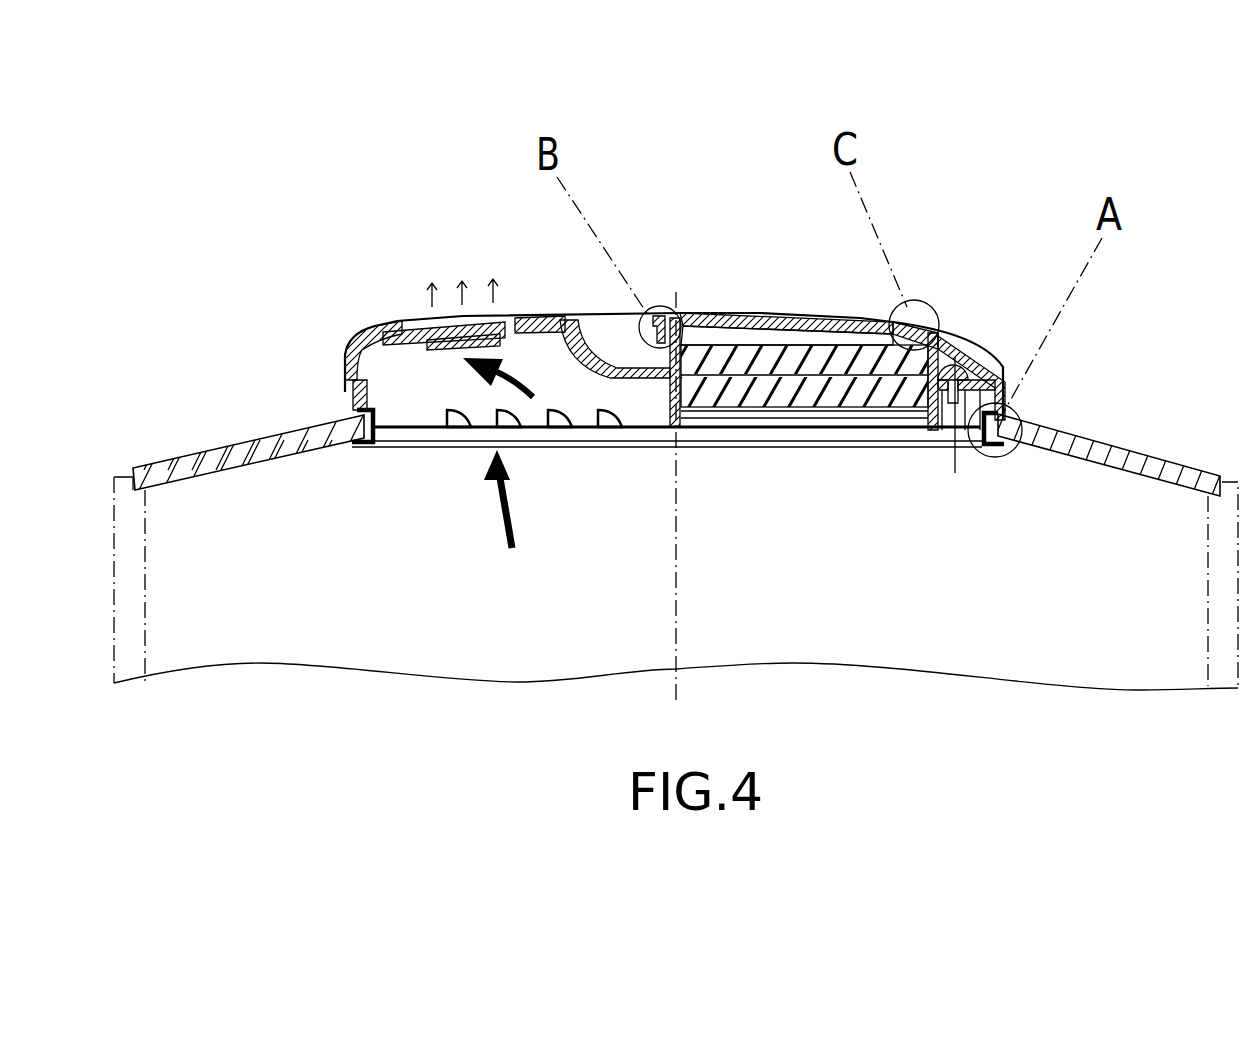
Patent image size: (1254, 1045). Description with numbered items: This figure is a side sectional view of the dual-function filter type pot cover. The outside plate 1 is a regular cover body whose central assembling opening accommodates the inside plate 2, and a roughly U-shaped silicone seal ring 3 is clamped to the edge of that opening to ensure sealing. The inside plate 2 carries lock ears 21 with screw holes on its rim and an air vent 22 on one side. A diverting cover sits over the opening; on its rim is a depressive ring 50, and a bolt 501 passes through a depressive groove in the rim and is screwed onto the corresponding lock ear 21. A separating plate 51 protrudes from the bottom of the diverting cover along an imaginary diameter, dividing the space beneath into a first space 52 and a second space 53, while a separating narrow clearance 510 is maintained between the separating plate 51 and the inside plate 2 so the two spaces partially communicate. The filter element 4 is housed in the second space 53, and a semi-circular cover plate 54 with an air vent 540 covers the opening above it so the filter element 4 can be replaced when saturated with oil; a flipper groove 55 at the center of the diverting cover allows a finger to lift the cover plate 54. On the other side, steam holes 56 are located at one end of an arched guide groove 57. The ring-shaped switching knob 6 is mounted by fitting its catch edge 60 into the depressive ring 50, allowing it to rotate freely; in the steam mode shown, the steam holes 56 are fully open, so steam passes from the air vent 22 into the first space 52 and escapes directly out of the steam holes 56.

The outside plate 1 is at (1157, 458).
The inside plate 2 is at (808, 430).
The silicone seal ring 3 is at (356, 412).
The filter element 4 is at (848, 400).
The switching knob 6 is at (360, 345).
The lock ear 21 is at (948, 415).
The air vent 22 is at (553, 430).
The depressive ring 50 is at (367, 383).
The separating plate 51 is at (658, 428).
The first space 52 is at (539, 345).
The second space 53 is at (708, 330).
The cover plate 54 is at (738, 323).
The flipper groove 55 is at (623, 330).
The steam holes 56 is at (442, 325).
The arched guide groove 57 is at (424, 325).
The catch edge 60 is at (355, 390).
The bolt 501 is at (972, 330).
The separating narrow clearance 510 is at (690, 430).
The air vent 540 is at (820, 324).